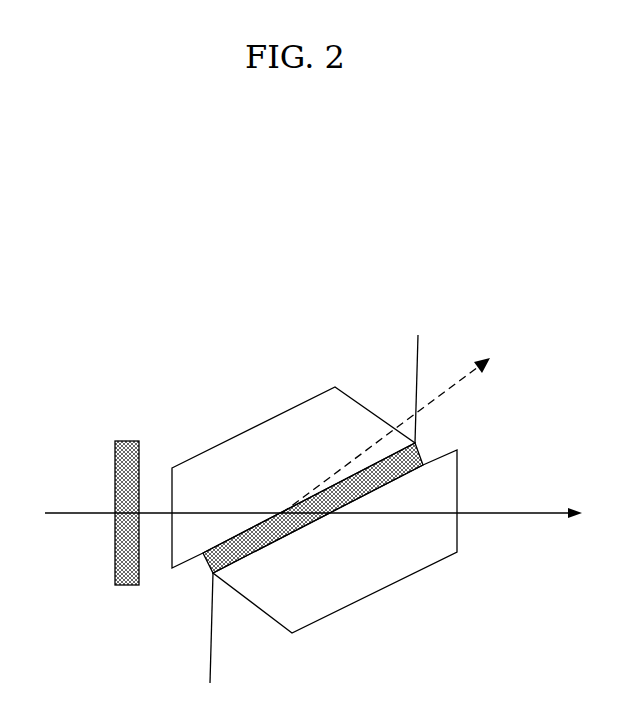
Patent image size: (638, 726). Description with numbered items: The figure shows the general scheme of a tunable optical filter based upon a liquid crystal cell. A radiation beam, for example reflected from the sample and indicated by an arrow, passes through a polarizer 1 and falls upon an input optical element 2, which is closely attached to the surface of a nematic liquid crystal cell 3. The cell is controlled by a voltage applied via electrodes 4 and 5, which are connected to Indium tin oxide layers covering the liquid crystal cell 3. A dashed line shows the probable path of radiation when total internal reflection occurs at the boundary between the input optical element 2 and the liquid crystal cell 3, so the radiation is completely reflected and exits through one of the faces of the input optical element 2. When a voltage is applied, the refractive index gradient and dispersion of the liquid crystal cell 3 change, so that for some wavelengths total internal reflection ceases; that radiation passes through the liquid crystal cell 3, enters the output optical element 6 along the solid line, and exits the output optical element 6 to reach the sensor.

The polarizer 1 is at (127, 446).
The input optical element 2 is at (277, 417).
The nematic liquid crystal cell 3 is at (383, 460).
The electrode 4 is at (418, 355).
The electrode 5 is at (212, 656).
The output optical element 6 is at (383, 575).